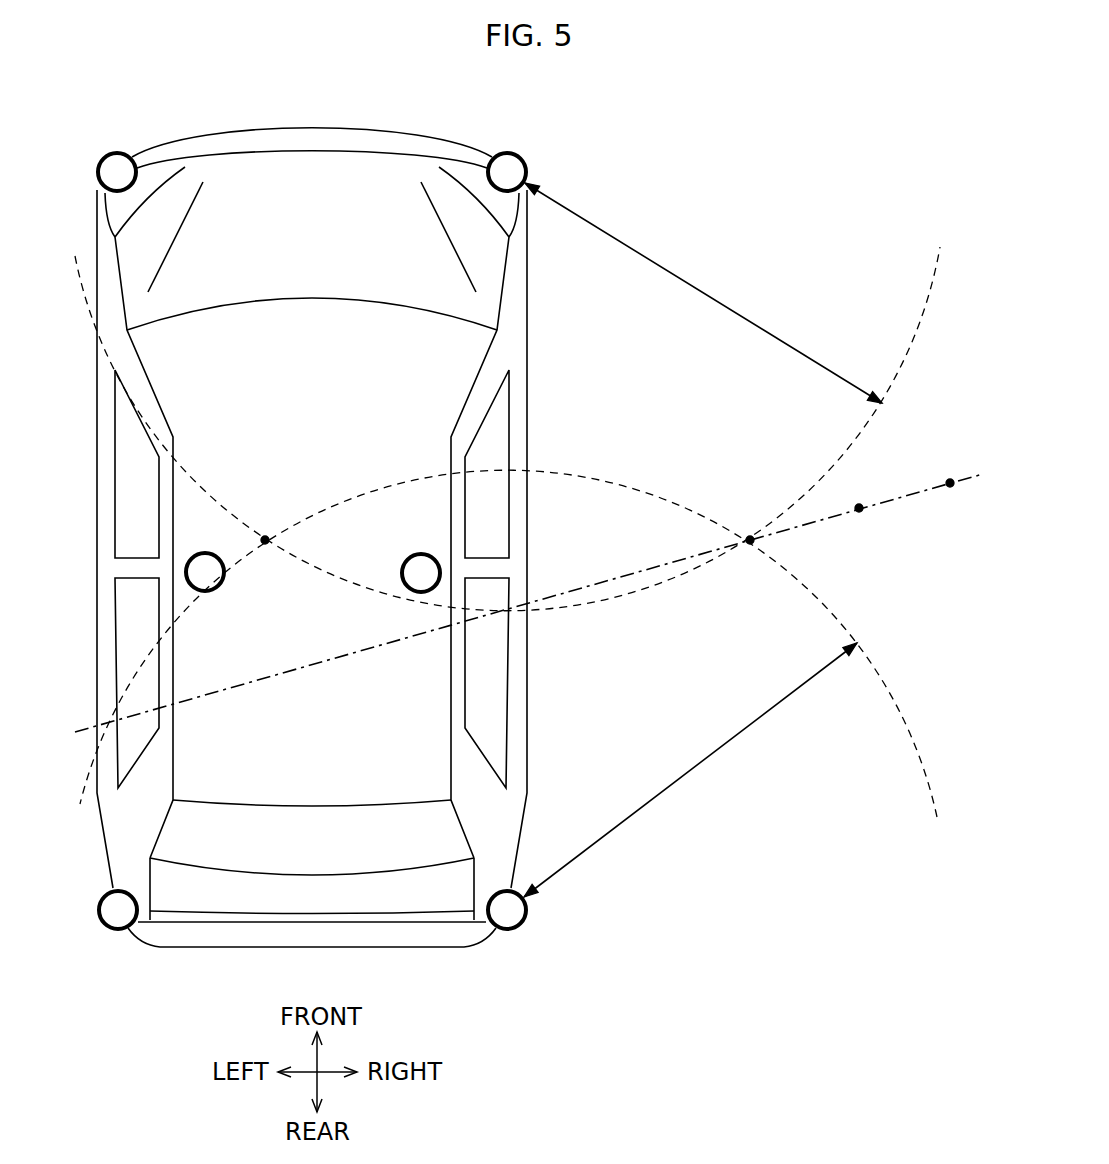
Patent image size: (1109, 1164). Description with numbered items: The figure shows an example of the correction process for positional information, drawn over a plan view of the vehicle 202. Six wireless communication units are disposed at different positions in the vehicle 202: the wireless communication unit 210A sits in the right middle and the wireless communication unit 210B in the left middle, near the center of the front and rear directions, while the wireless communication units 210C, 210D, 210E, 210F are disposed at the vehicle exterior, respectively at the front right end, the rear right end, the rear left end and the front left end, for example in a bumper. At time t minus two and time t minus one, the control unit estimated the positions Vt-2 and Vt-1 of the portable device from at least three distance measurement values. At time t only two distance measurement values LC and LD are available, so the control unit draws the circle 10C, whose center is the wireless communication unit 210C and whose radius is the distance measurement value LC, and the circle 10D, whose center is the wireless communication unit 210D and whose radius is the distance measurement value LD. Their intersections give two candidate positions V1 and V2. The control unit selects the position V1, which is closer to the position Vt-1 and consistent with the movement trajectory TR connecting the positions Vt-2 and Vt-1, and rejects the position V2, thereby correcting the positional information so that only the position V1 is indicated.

The vehicle 202 is at (222, 950).
The wireless communication unit 210A is at (410, 592).
The wireless communication unit 210B is at (205, 593).
The wireless communication unit 210C is at (527, 162).
The wireless communication unit 210D is at (511, 932).
The wireless communication unit 210E is at (110, 931).
The wireless communication unit 210F is at (103, 158).
The circle 10C is at (935, 273).
The circle 10D is at (933, 793).
The movement trajectory TR is at (908, 494).
The position V1 is at (750, 540).
The position V2 is at (265, 540).
The position Vt-1 is at (859, 508).
The position Vt-2 is at (950, 483).
The distance measurement value LC is at (703, 293).
The distance measurement value LD is at (690, 770).